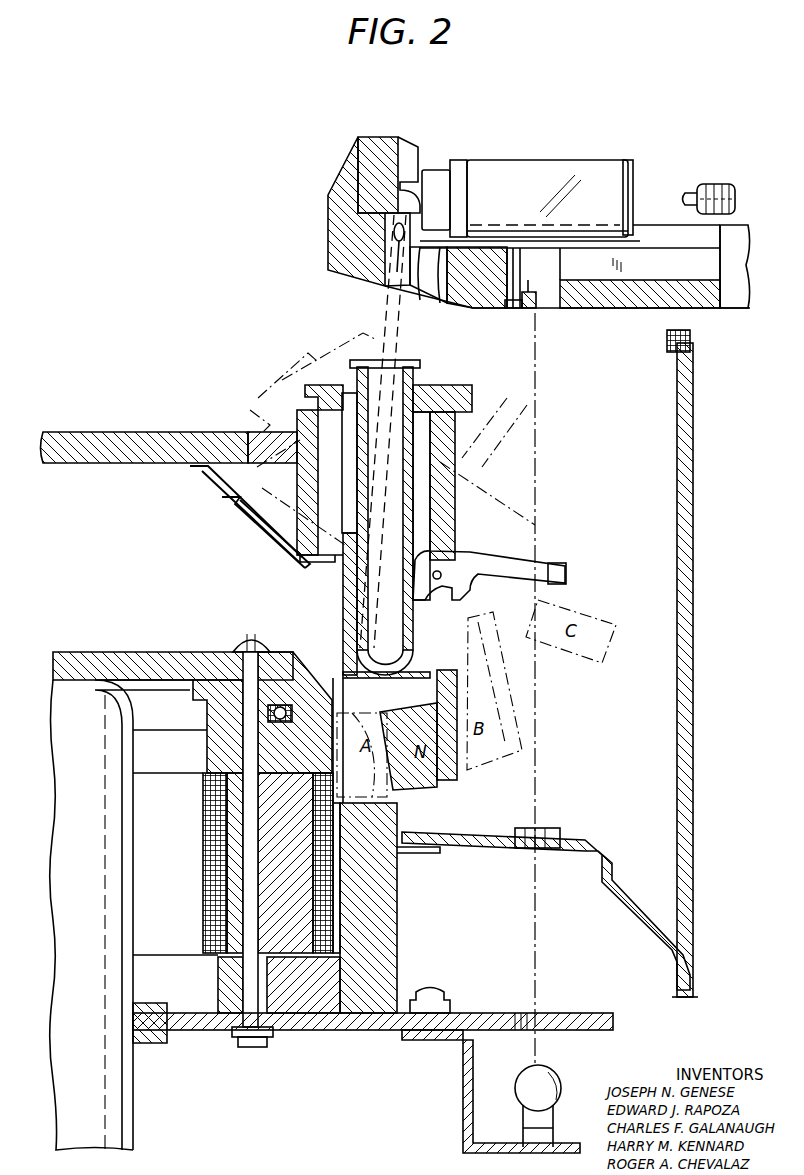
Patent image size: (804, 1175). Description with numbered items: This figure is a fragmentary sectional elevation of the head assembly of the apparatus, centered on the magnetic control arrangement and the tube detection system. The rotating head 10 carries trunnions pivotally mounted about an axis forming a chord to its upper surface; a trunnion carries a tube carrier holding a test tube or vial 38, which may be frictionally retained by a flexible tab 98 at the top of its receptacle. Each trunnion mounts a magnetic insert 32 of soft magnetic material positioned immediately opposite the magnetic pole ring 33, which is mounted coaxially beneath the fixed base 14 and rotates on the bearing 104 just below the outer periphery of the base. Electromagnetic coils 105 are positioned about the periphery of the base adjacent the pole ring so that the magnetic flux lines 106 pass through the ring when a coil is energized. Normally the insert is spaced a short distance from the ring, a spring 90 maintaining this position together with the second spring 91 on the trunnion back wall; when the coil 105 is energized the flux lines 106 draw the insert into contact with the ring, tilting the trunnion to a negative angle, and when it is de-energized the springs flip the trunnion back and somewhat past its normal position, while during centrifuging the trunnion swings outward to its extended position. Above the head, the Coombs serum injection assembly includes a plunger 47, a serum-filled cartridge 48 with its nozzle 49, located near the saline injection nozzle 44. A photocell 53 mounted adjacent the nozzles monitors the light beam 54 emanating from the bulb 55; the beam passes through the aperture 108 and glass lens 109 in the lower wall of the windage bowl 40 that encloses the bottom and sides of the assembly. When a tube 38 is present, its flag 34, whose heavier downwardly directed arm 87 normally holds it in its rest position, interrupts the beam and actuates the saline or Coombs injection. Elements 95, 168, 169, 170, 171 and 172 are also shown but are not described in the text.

The head 10 is at (123, 432).
The base 14 is at (127, 663).
The magnetic insert 32 is at (427, 780).
The magnetic pole ring 33 is at (330, 716).
The flag 34 is at (468, 573).
The test tube or vial 38 is at (357, 378).
The windage bowl 40 is at (691, 405).
The injection nozzle 44 is at (385, 252).
The plunger 47 is at (710, 188).
The serum-filled cartridge 48 is at (530, 160).
The nozzle 49 is at (357, 194).
The photocell 53 is at (530, 292).
The light beam 54 is at (537, 368).
The bulb 55 is at (543, 1063).
The downwardly directed arm 87 is at (550, 570).
The spring 90 is at (222, 482).
The spring 91 is at (265, 536).
The bushing 95 is at (452, 386).
The flexible tab 98 is at (347, 437).
The bearing 104 is at (290, 663).
The electromagnetic coil 105 is at (203, 818).
The magnetic flux lines 106 is at (367, 913).
The aperture 108 is at (535, 847).
The glass lens 109 is at (548, 835).
The spring 168 is at (423, 293).
The cam block 169 is at (372, 148).
The cam follower 170 is at (412, 160).
The frame channel 171 is at (683, 268).
The clamp block 172 is at (560, 305).